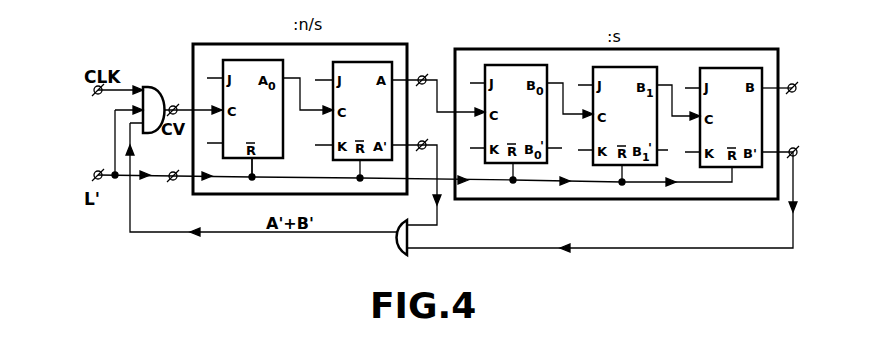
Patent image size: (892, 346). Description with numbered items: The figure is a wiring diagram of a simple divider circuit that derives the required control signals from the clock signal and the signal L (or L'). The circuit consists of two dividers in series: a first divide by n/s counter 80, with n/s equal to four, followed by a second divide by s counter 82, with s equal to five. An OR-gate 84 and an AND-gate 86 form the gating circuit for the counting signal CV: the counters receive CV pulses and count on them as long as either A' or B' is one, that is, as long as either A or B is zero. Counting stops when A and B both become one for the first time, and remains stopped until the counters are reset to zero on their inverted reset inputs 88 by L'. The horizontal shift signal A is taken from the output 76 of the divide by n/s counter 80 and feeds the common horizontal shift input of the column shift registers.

The output 76 is at (422, 75).
The divide by n/s counter 80 is at (387, 44).
The divide by s counter 82 is at (696, 49).
The OR-gate 84 is at (398, 240).
The AND-gate 86 is at (158, 86).
The reset inputs 88 is at (253, 163).